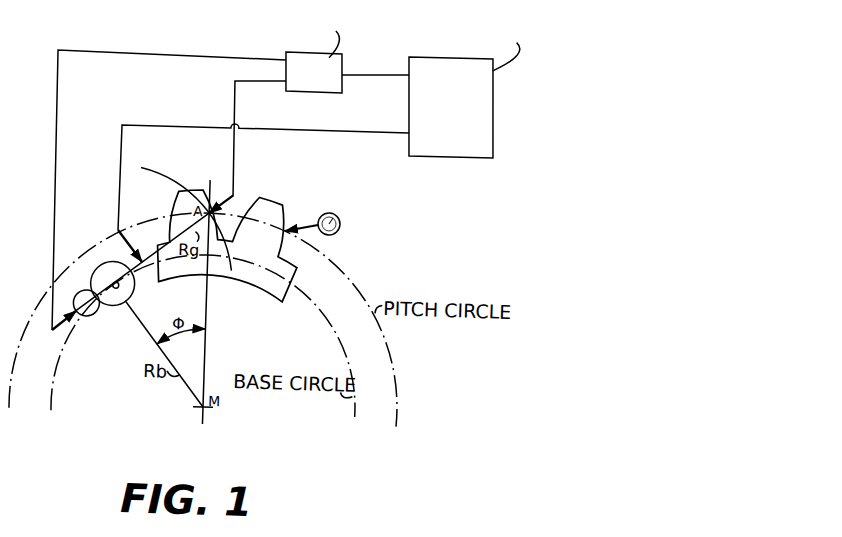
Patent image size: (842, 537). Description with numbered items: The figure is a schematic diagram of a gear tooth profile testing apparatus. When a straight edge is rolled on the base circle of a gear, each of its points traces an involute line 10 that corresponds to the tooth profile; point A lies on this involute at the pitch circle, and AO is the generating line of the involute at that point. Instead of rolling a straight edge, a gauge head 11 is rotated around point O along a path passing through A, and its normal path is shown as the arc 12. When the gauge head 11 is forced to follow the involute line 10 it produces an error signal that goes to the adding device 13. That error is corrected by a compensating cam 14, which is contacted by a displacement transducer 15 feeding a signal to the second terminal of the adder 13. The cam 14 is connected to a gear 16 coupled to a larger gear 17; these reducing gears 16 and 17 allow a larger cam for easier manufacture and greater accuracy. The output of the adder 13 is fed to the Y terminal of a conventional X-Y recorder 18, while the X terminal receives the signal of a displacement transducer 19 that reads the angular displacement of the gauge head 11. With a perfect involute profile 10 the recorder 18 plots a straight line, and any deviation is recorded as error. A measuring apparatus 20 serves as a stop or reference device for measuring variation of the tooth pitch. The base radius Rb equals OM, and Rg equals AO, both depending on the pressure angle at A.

The involute line 10 is at (206, 194).
The gauge head 11 is at (216, 204).
The normal path of the gauge head 12 is at (158, 160).
The adding device 13 is at (332, 84).
The compensating cam 14 is at (71, 306).
The displacement transducer 15 is at (50, 340).
The gear 16 is at (88, 320).
The larger gear 17 is at (112, 258).
The X-Y recorder 18 is at (485, 128).
The displacement transducer 19 is at (121, 242).
The measuring apparatus 20 is at (304, 222).